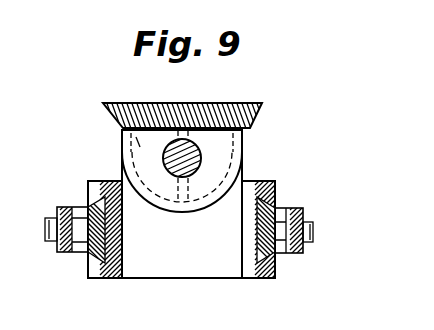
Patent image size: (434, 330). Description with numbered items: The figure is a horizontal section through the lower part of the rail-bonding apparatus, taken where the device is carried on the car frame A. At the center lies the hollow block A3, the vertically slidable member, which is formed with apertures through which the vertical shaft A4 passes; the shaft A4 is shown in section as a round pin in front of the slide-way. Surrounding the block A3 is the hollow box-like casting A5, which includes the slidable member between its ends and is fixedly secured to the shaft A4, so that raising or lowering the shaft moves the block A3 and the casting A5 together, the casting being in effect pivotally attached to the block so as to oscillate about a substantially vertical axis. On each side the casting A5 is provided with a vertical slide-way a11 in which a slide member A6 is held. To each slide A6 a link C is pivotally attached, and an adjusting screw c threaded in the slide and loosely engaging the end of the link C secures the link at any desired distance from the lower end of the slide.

The car frame A is at (240, 280).
The hollow block A3 is at (120, 157).
The vertical shaft A4 is at (201, 153).
The hollow box-like casting A5 is at (140, 280).
The slide member A6 is at (287, 264).
The vertical slide-way a11 is at (86, 200).
The link C is at (58, 211).
The adjusting screw c is at (123, 231).